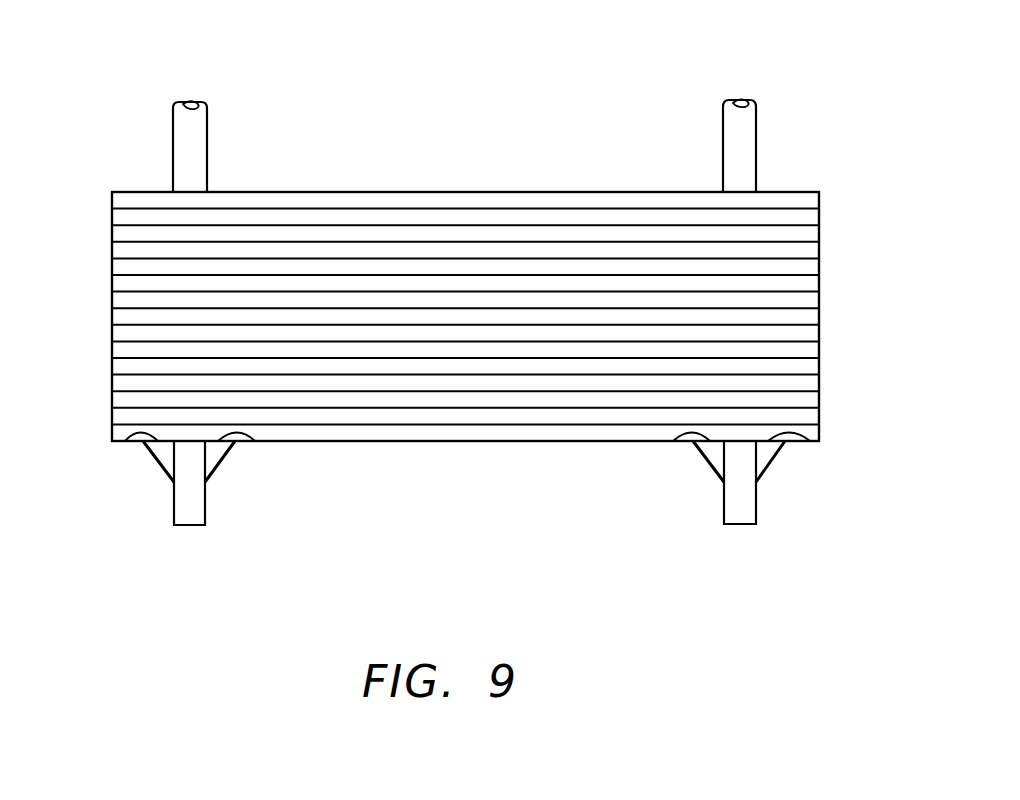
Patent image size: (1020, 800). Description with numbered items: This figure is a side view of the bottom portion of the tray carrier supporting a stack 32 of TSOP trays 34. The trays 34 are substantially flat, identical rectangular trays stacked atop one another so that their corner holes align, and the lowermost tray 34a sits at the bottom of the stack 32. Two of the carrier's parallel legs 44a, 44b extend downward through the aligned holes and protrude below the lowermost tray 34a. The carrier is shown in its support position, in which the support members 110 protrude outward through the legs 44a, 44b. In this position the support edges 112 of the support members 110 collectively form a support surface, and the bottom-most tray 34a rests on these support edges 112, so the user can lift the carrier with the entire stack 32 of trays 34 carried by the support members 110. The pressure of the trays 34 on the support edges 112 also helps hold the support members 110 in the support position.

The stack 32 is at (603, 76).
The TSOP tray 34 is at (247, 192).
The lowermost tray 34a is at (120, 437).
The leg 44a is at (188, 510).
The leg 44b is at (740, 512).
The support member 110 is at (160, 462).
The support edge 112 is at (125, 441).